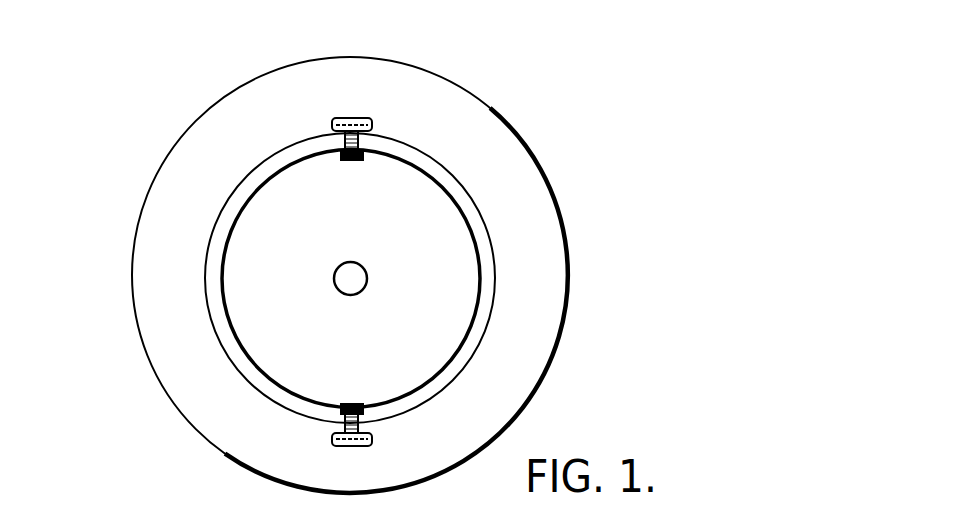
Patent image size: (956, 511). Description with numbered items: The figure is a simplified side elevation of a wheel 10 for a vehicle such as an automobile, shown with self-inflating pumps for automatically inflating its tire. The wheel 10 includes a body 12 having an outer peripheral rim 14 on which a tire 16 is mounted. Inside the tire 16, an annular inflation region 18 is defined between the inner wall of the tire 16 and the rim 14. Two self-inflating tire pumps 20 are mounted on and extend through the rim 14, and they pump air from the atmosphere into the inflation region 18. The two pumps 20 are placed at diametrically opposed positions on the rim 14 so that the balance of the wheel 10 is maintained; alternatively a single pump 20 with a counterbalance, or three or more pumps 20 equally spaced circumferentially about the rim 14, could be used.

The wheel 10 is at (158, 91).
The body 12 is at (472, 283).
The outer peripheral rim 14 is at (472, 195).
The tire 16 is at (522, 377).
The annular inflation region 18 is at (231, 170).
The self-inflating tire pump 20 is at (364, 118).